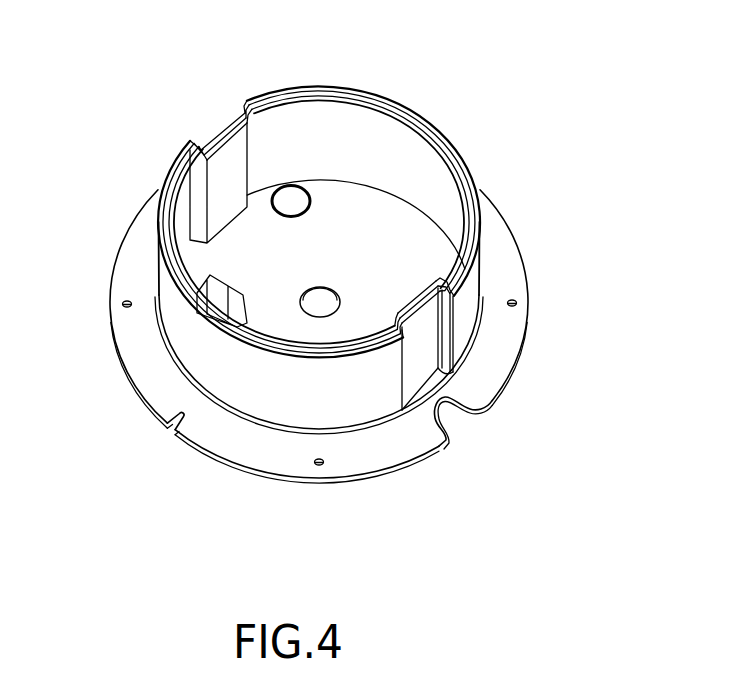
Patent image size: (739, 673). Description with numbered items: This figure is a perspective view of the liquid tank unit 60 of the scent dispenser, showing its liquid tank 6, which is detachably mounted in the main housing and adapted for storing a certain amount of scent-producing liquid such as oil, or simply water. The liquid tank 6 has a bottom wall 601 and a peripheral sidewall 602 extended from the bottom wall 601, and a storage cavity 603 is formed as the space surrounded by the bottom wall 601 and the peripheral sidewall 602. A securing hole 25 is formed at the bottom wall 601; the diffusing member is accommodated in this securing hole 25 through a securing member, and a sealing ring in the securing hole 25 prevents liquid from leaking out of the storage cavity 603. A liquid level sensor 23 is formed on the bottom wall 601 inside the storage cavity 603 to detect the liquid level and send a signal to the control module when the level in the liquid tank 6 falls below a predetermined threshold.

The liquid tank unit 60 is at (319, 284).
The liquid tank 6 is at (323, 383).
The bottom wall 601 is at (403, 242).
The peripheral sidewall 602 is at (460, 328).
The storage cavity 603 is at (363, 213).
The liquid level sensor 23 is at (289, 200).
The securing hole 25 is at (303, 307).